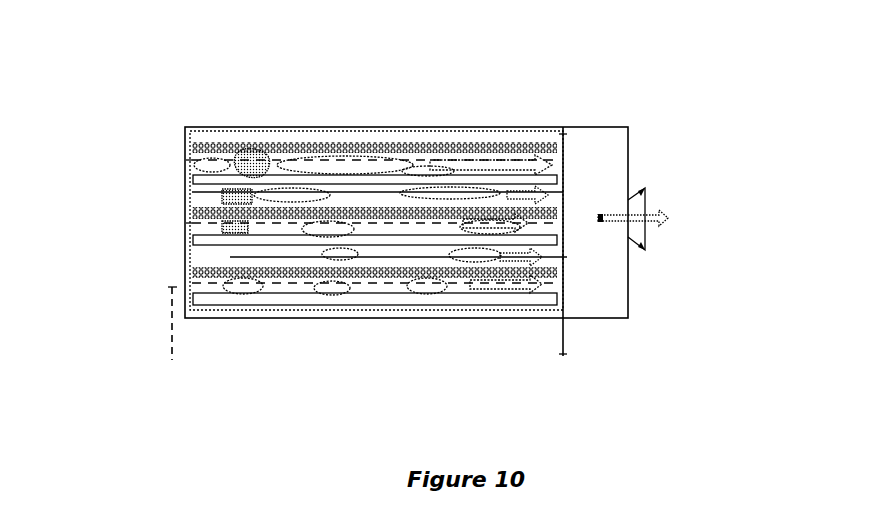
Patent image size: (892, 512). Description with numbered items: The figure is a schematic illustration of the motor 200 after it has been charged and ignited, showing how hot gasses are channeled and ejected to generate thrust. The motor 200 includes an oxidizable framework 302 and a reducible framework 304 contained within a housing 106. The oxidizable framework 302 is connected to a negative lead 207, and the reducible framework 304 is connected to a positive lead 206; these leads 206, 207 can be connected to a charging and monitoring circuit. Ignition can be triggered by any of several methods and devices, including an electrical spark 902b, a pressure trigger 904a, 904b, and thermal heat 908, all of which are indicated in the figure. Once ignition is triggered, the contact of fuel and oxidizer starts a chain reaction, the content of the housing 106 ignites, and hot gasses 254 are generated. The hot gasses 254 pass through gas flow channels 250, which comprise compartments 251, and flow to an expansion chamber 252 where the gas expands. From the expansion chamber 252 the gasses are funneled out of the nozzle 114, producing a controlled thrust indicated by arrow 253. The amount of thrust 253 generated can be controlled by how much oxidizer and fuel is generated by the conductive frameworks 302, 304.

The motor 200 is at (158, 70).
The gas flow channels 250 is at (170, 168).
The electrical spark 902b is at (253, 150).
The compartments 251 is at (308, 145).
The hot gasses 254 is at (420, 155).
The oxidizable framework 302 is at (503, 133).
The housing 106 is at (550, 127).
The expansion chamber 252 is at (605, 173).
The arrow 253 is at (672, 215).
The nozzle 114 is at (645, 242).
The pressure trigger 904a is at (223, 193).
The pressure trigger 904b is at (225, 225).
The positive lead 206 is at (170, 335).
The thermal heat 908 is at (207, 286).
The reducible framework 304 is at (404, 318).
The negative lead 207 is at (563, 338).